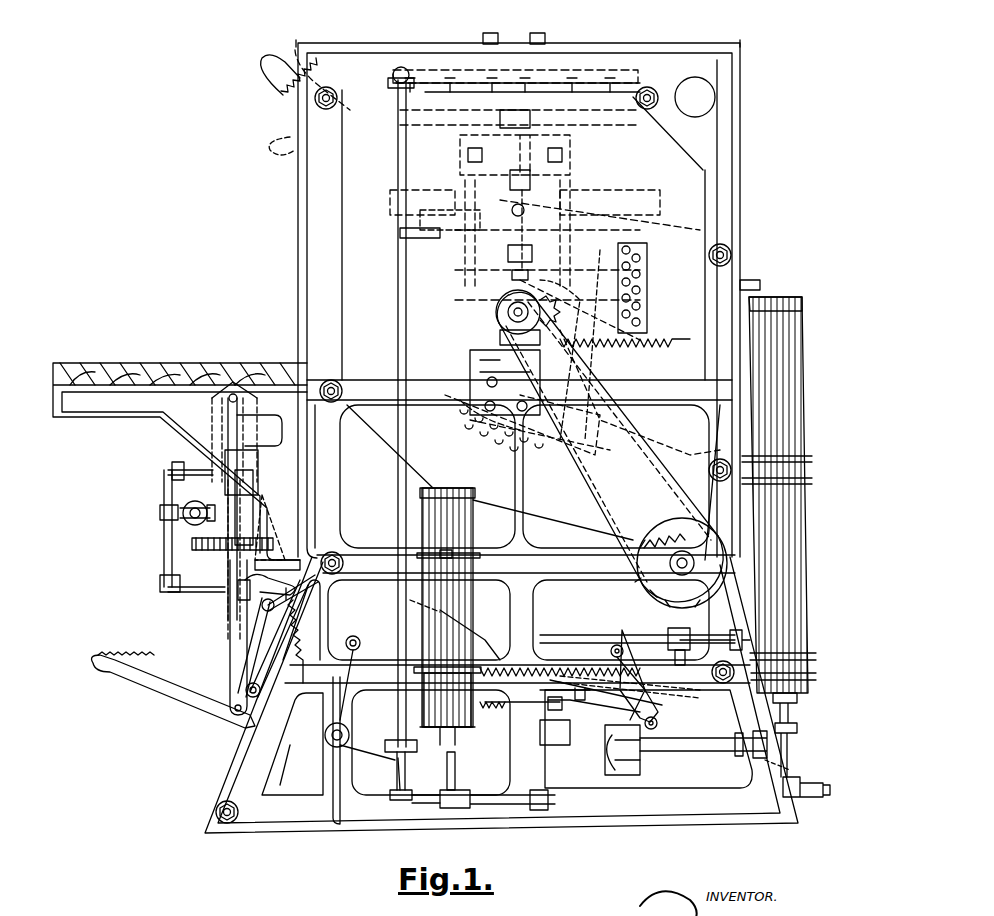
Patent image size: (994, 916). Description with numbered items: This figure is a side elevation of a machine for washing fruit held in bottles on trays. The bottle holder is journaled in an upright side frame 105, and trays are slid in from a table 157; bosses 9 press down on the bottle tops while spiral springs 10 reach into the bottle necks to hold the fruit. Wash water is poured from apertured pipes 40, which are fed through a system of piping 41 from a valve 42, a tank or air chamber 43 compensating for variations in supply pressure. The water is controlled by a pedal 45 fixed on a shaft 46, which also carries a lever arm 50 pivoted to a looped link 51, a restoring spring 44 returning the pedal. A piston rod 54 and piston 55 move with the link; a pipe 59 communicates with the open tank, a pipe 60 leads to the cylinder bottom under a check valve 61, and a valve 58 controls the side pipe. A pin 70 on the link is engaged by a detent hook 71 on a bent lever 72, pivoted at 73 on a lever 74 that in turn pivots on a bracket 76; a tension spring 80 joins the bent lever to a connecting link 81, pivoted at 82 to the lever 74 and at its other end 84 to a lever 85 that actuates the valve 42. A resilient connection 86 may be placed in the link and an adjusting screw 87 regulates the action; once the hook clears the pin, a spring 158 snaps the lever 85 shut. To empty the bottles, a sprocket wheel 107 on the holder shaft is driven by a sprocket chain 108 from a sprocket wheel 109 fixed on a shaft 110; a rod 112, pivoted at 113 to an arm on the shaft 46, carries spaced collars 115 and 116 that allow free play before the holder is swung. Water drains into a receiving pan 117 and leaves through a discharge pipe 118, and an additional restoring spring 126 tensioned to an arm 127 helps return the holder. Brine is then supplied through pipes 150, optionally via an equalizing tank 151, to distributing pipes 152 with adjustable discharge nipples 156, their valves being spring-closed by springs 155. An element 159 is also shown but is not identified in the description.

The upright side frame 105 is at (307, 292).
The distributing pipes 152 is at (432, 68).
The adjustable discharge nipples 156 is at (530, 90).
The springs 155 is at (298, 70).
The brine supplying pipes 150 is at (392, 152).
The pipes 40 is at (595, 118).
The bosses 9 is at (440, 222).
The spiral springs 10 is at (405, 240).
The system of piping 41 is at (525, 260).
The sprocket wheel 107 is at (500, 308).
The sprocket chain 108 is at (650, 447).
The shaft 110 is at (676, 566).
The sprocket wheel 109 is at (660, 530).
The hopper 159 is at (548, 296).
The additional restoring spring 126 is at (660, 343).
The arm 127 is at (540, 375).
The tank or air chamber 43 is at (800, 340).
The receiving pan 117 is at (702, 430).
The table 157 is at (60, 363).
The piston rod 54 is at (235, 432).
The piston 55 is at (235, 490).
The pipe 59 is at (168, 470).
The pipe 60 is at (164, 562).
The valve 58 is at (195, 501).
The check valve 61 is at (253, 510).
The adjusting screw 87 is at (235, 560).
The bent lever 72 is at (290, 560).
The pivot 73 is at (262, 598).
The lever 74 is at (238, 605).
The pin 70 is at (235, 630).
The looped link 51 is at (232, 660).
The pivot 82 is at (246, 688).
The pedal 45 is at (130, 685).
The tension spring 80 is at (290, 610).
The bracket 76 is at (290, 595).
The detent hook 71 is at (320, 633).
The pivot 113 is at (353, 636).
The equalizing tank 151 is at (447, 488).
The spring 158 is at (497, 636).
The restoring spring 44 is at (578, 668).
The rod 112 is at (612, 644).
The collar 115 is at (655, 652).
The collar 116 is at (728, 645).
The lever 85 is at (642, 694).
The pivot end 84 is at (662, 718).
The resilient connection 86 is at (552, 712).
The valve 42 is at (612, 766).
The discharge pipe 118 is at (788, 740).
The lever arm 50 is at (300, 748).
The shaft 46 is at (345, 748).
The connecting link 81 is at (395, 705).